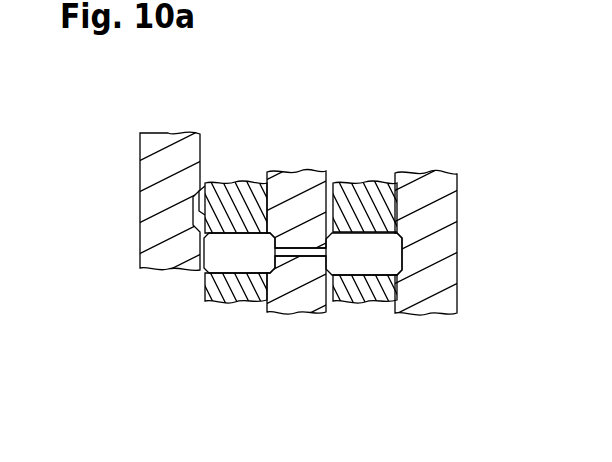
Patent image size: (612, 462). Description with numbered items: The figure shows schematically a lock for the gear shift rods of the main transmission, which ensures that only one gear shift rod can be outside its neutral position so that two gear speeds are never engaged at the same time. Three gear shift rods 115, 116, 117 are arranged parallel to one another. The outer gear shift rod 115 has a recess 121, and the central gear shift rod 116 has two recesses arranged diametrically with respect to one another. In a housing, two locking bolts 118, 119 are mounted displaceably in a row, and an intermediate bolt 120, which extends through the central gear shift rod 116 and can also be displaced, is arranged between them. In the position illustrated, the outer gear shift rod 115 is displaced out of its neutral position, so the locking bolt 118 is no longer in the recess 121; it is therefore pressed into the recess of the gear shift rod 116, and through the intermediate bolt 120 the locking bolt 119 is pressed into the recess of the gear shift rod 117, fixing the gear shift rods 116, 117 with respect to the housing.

The gear shift rod 115 is at (177, 262).
The central gear shift rod 116 is at (302, 298).
The gear shift rod 117 is at (423, 302).
The locking bolt 118 is at (242, 240).
The locking bolt 119 is at (375, 245).
The intermediate bolt 120 is at (333, 232).
The recess 121 is at (198, 211).